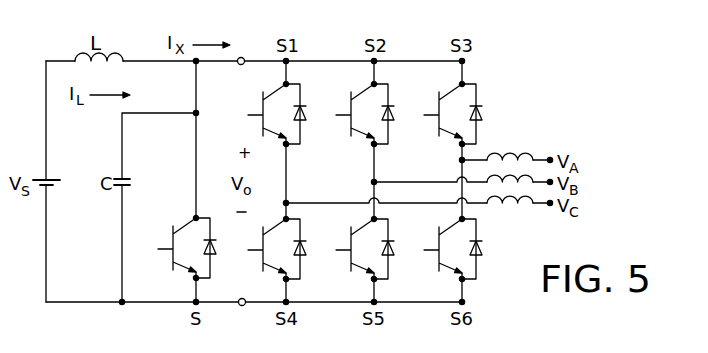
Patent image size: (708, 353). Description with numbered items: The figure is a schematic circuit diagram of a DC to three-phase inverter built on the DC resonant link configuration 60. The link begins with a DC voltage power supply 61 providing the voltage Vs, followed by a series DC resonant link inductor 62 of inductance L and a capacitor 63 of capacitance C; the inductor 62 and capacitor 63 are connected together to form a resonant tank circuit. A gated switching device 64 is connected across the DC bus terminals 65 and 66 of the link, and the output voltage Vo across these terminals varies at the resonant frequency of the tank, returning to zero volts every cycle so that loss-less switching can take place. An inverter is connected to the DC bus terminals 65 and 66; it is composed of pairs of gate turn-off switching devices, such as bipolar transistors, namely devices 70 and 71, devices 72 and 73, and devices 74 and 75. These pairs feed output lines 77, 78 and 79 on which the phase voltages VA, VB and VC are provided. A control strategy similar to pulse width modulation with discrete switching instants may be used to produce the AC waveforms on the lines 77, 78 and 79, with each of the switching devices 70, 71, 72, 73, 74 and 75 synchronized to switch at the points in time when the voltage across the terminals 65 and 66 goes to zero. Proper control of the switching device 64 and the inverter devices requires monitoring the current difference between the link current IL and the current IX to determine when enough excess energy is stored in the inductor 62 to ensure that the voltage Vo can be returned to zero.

The DC resonant link configuration 60 is at (157, 311).
The DC voltage power supply 61 is at (40, 177).
The series DC resonant link inductor 62 is at (77, 51).
The capacitor 63 is at (118, 178).
The gated switching device 64 is at (172, 266).
The DC bus terminal 65 is at (244, 57).
The DC bus terminal 66 is at (240, 307).
The gate turn-off switching device 70 is at (262, 98).
The gate turn-off switching device 71 is at (262, 268).
The gate turn-off switching device 72 is at (350, 98).
The gate turn-off switching device 73 is at (350, 268).
The gate turn-off switching device 74 is at (438, 98).
The gate turn-off switching device 75 is at (438, 268).
The output line 77 is at (494, 153).
The output line 78 is at (532, 175).
The output line 79 is at (525, 203).